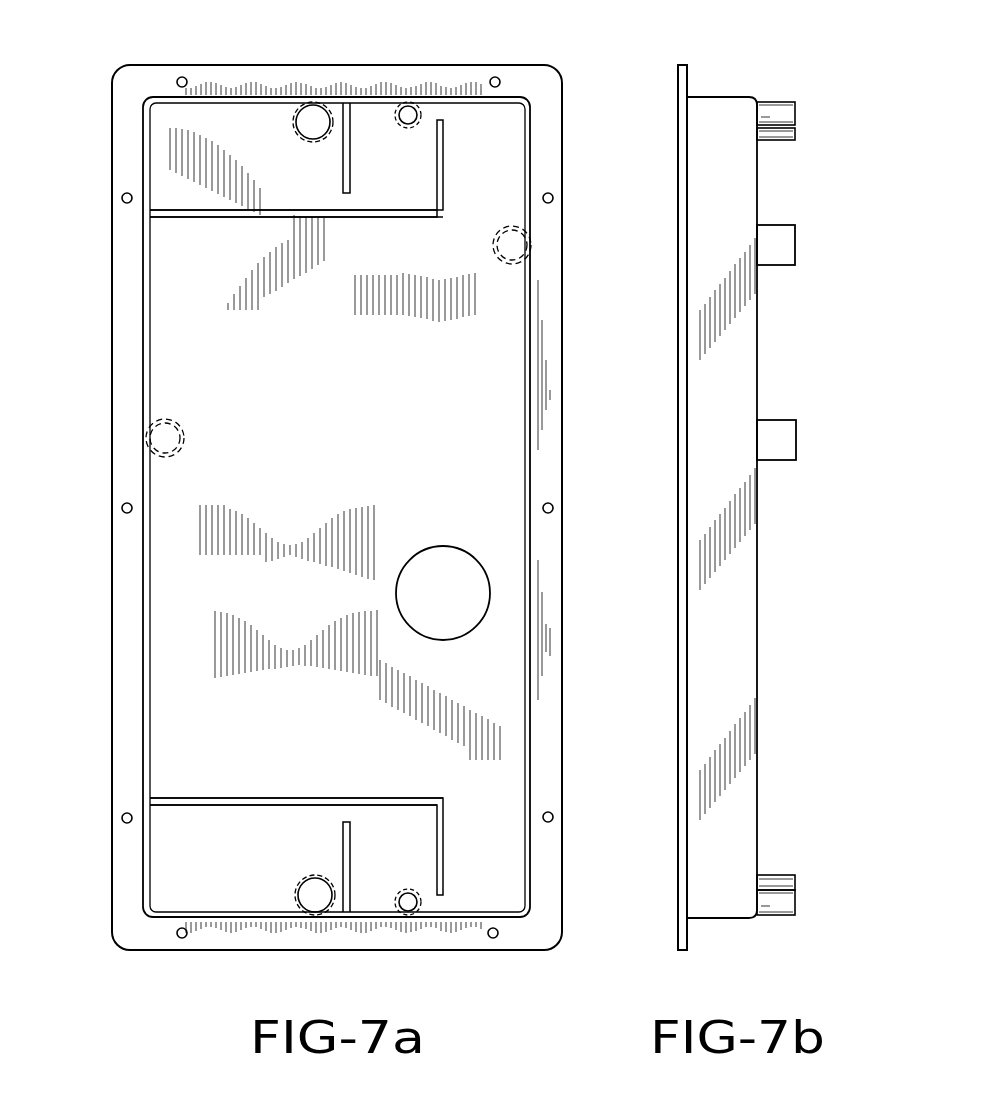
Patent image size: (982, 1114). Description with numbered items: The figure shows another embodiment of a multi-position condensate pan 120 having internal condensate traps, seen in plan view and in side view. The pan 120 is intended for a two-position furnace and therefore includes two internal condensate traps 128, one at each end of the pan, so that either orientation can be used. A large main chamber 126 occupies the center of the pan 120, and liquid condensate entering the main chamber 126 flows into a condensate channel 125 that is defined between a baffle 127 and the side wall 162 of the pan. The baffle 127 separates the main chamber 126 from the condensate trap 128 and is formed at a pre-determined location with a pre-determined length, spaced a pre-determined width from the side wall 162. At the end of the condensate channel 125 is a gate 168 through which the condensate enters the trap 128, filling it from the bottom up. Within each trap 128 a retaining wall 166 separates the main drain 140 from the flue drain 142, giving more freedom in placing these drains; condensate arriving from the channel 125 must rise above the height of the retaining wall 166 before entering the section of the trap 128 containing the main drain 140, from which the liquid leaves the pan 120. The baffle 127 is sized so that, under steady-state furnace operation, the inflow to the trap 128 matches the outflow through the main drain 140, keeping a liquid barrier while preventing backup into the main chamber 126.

In FIG. 7A, the condensate pan 120 is at (115, 357).
In FIG. 7B, the condensate pan 120 is at (720, 417).
In FIG. 7A, the condensate channel 125 is at (493, 855).
In FIG. 7A, the main chamber 126 is at (180, 545).
In FIG. 7A, the baffle 127 is at (198, 208).
In FIG. 7A, the condensate trap 128 is at (188, 130).
In FIG. 7A, the main drain 140 is at (326, 134).
In FIG. 7B, the main drain 140 is at (795, 132).
In FIG. 7A, the flue drain 142 is at (410, 108).
In FIG. 7B, the flue drain 142 is at (795, 112).
In FIG. 7A, the side wall 162 is at (188, 913).
In FIG. 7A, the retaining wall 166 is at (350, 155).
In FIG. 7A, the gate 168 is at (453, 900).